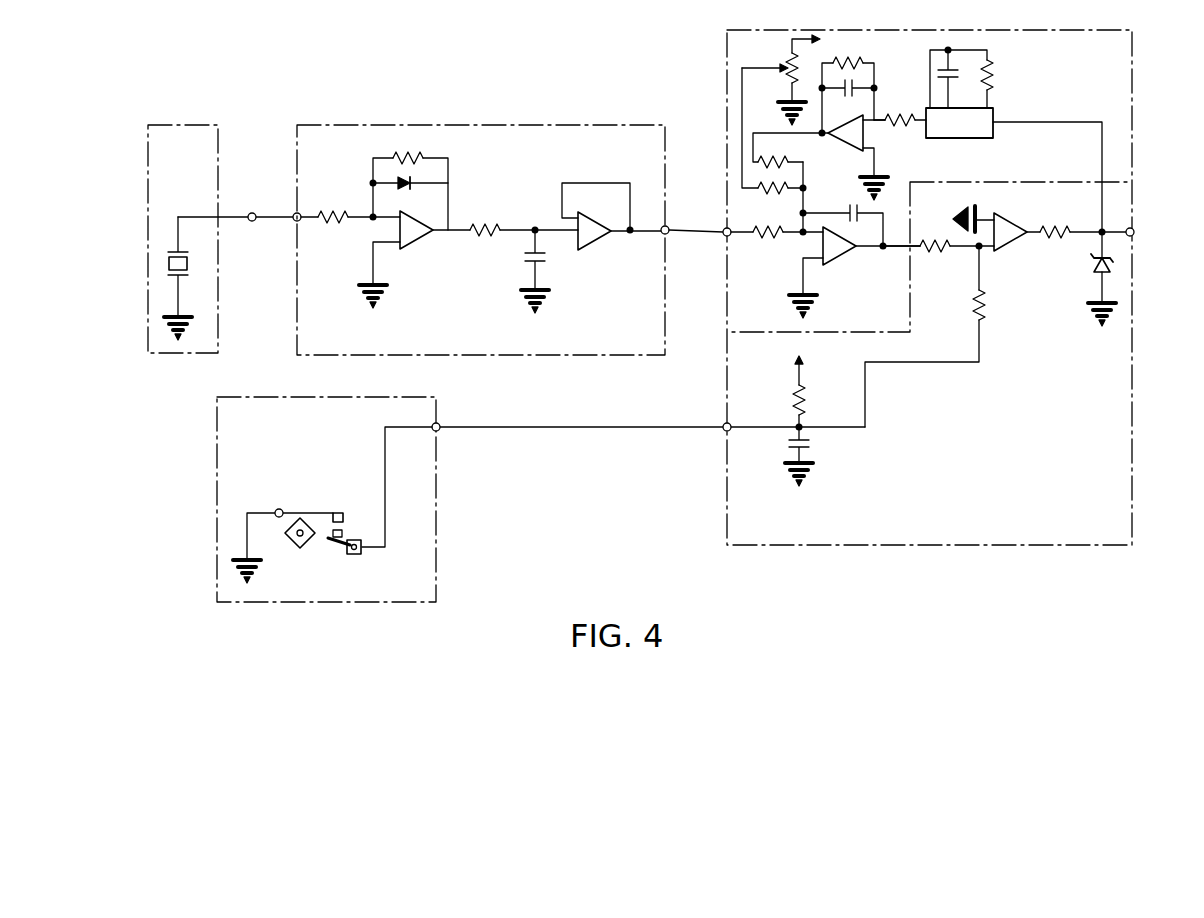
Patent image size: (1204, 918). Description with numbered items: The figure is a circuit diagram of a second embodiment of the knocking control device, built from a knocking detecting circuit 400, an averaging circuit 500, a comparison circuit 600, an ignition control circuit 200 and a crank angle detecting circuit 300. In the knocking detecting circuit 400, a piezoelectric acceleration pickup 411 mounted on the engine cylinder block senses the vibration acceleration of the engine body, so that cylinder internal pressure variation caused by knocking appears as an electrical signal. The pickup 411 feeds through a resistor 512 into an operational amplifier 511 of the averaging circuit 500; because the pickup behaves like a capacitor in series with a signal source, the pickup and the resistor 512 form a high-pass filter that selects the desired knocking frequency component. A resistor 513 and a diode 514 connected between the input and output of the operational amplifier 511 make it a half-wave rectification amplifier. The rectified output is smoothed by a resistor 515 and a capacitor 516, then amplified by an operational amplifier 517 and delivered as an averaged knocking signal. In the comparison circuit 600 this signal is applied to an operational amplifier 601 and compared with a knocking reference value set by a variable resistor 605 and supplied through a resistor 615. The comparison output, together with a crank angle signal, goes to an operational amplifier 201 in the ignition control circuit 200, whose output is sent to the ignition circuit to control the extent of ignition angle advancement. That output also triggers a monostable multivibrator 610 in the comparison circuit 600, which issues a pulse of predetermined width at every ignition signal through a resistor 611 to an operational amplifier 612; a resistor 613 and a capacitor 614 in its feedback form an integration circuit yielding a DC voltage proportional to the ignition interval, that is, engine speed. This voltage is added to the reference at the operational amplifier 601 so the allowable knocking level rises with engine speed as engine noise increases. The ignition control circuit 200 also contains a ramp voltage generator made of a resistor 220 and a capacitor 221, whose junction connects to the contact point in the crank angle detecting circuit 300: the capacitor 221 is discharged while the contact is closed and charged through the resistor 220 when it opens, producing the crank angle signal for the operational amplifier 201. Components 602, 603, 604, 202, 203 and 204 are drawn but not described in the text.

The knocking detecting circuit 400 is at (172, 125).
The piezoelectric acceleration pickup 411 is at (169, 262).
The averaging circuit 500 is at (500, 125).
The operational amplifier 511 is at (418, 244).
The resistor 512 is at (340, 213).
The resistor 513 is at (405, 155).
The diode 514 is at (412, 183).
The resistor 515 is at (497, 225).
The capacitor 516 is at (545, 270).
The operational amplifier 517 is at (598, 245).
The comparison circuit 600 is at (968, 30).
The operational amplifier 601 is at (834, 257).
The capacitor 602 is at (865, 213).
The resistor 603 is at (770, 238).
The resistor 604 is at (795, 191).
The variable resistor 605 is at (790, 58).
The monostable multivibrator 610 is at (996, 110).
The resistor 611 is at (900, 124).
The operational amplifier 612 is at (866, 136).
The resistor 613 is at (858, 62).
The capacitor 614 is at (856, 86).
The resistor 615 is at (795, 165).
The ignition control circuit 200 is at (1132, 465).
The operational amplifier 201 is at (1005, 214).
The resistor 202 is at (938, 252).
The output resistor 203 is at (1052, 238).
The zener diode 204 is at (1096, 272).
The resistor 220 is at (804, 385).
The capacitor 221 is at (812, 450).
The crank angle detecting circuit 300 is at (438, 548).